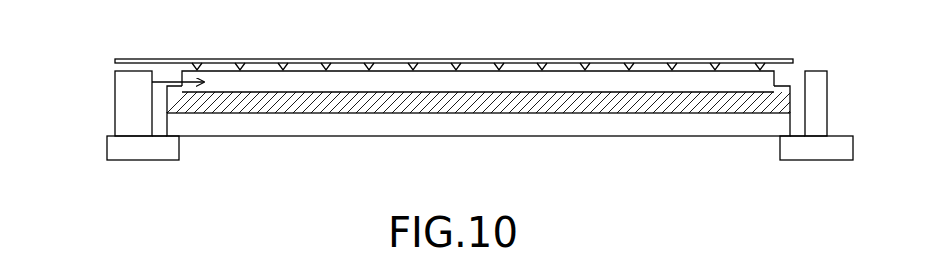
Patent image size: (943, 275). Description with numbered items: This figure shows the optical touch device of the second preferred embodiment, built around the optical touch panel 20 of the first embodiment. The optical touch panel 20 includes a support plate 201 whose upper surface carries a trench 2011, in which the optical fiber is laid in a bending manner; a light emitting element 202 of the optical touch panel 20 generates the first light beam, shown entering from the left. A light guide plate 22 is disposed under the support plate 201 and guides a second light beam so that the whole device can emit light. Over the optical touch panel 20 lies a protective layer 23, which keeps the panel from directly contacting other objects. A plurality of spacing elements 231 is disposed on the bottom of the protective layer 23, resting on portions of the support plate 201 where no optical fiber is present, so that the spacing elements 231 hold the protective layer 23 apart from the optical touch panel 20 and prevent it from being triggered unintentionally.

The optical touch panel 20 is at (454, 111).
The support plate 201 is at (674, 104).
The trench 2011 is at (175, 98).
The light emitting element 202 is at (129, 115).
The light guide plate 22 is at (422, 125).
The protective layer 23 is at (454, 40).
The spacing elements 231 is at (327, 61).